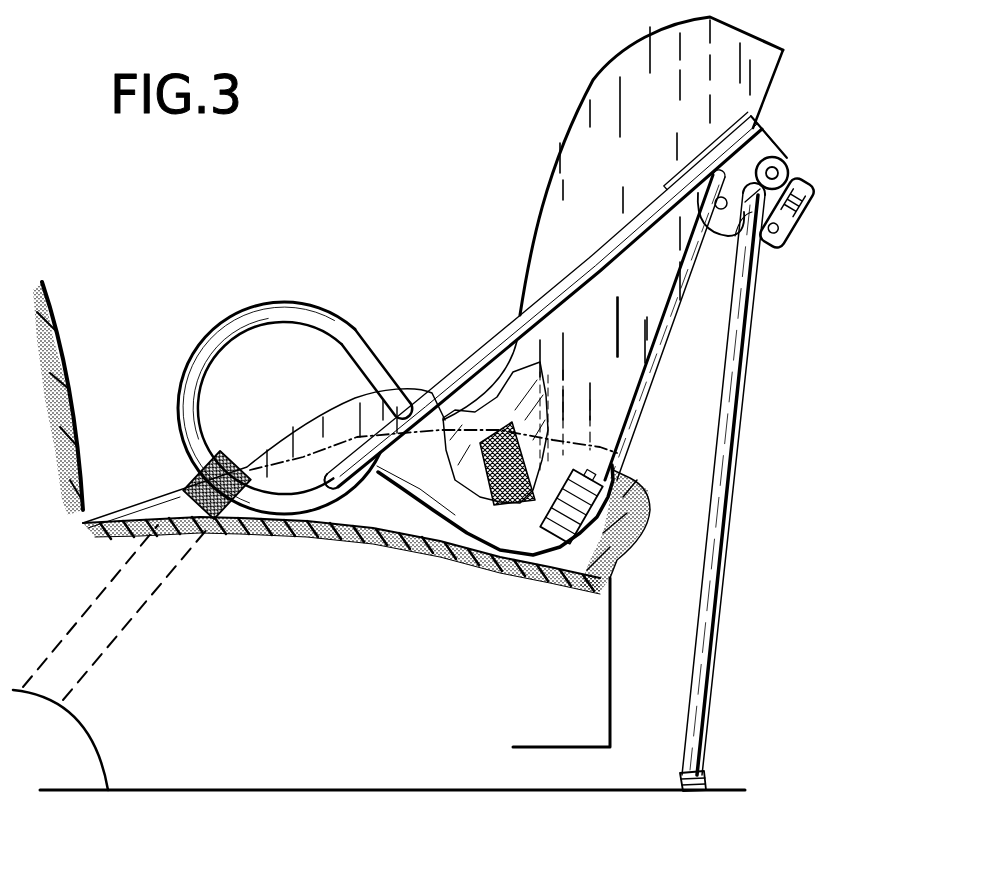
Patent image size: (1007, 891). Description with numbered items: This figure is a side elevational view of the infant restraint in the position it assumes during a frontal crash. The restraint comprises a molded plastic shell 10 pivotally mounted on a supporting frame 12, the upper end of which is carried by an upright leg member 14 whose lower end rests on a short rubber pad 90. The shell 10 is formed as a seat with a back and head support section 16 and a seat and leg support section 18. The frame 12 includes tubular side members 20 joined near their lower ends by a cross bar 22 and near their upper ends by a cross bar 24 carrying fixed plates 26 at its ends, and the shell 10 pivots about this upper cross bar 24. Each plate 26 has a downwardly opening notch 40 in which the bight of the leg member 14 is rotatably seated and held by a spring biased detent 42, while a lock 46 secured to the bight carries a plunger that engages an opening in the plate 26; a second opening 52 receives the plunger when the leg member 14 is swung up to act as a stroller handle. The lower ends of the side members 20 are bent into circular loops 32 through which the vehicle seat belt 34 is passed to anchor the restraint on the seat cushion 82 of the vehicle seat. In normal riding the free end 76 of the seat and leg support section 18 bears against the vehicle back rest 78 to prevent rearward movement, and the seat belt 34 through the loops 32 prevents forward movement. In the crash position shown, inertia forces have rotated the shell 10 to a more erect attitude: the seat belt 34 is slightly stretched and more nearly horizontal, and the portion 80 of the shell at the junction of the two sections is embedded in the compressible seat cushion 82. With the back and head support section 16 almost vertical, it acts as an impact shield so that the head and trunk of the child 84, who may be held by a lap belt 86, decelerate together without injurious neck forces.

The shell 10 is at (548, 178).
The supporting frame 12 is at (460, 365).
The upright leg member 14 is at (732, 538).
The back and head support section 16 is at (650, 382).
The seat and leg support section 18 is at (400, 560).
The tubular side member 20 is at (620, 231).
The cross bar 22 is at (353, 495).
The cross bar 24 is at (720, 127).
The fixed plate 26 is at (760, 140).
The circular loop 32 is at (285, 300).
The seat belt 34 is at (195, 488).
The notch 40 is at (733, 233).
The spring biased detent 42 is at (813, 190).
The lock 46 is at (790, 163).
The second opening 52 is at (713, 210).
The free end 76 is at (250, 463).
The back rest 78 is at (60, 322).
The portion of the shell 80 is at (550, 560).
The seat cushion 82 is at (321, 521).
The child 84 is at (537, 407).
The lap belt 86 is at (533, 457).
The rubber pad 90 is at (705, 782).